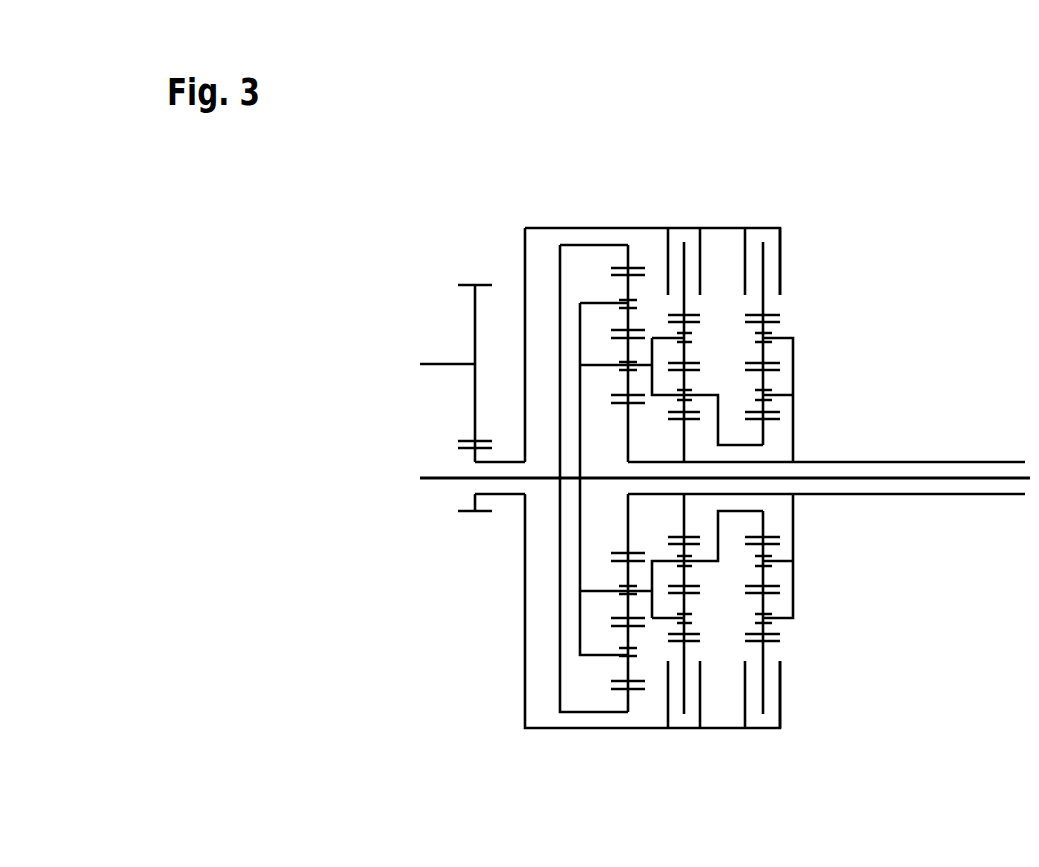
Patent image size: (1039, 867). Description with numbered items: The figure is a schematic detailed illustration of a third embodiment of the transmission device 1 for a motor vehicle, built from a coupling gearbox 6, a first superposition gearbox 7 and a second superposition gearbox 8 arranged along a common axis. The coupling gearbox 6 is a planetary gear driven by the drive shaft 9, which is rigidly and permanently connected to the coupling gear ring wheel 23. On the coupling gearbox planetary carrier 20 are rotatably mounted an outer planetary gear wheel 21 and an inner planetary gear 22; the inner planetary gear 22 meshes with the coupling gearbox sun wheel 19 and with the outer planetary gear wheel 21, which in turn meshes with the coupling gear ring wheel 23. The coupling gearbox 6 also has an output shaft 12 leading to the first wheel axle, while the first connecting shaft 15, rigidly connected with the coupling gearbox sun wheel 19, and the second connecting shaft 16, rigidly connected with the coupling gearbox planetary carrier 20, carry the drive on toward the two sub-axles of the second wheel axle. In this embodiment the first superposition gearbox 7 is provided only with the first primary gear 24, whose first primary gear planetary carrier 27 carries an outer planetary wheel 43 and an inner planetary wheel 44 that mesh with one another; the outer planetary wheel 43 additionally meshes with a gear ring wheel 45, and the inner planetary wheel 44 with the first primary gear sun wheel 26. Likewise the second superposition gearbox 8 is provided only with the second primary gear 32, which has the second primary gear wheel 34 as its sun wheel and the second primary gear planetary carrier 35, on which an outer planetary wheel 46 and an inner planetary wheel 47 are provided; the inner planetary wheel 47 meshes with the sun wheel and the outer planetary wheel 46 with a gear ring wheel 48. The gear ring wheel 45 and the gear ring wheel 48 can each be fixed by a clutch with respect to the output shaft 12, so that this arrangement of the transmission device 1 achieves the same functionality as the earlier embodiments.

The transmission device 1 is at (838, 132).
The coupling gearbox 6 is at (591, 220).
The first superposition gearbox 7 is at (694, 220).
The second superposition gearbox 8 is at (771, 220).
The drive shaft 9 is at (441, 476).
The output shaft 12 is at (506, 460).
The first connecting shaft 15 is at (878, 460).
The second connecting shaft 16 is at (947, 476).
The coupling gearbox sun wheel 19 is at (617, 553).
The coupling gearbox planetary carrier 20 is at (580, 627).
The outer planetary gear wheel 21 is at (621, 657).
The inner planetary gear 22 is at (620, 588).
The coupling gear ring wheel 23 is at (617, 690).
The first primary gear 24 is at (660, 292).
The first primary gear sun wheel 26 is at (693, 538).
The first primary gear planetary carrier 27 is at (670, 620).
The second primary gear 32 is at (818, 270).
The second primary gear wheel 34 is at (775, 540).
The second primary gear planetary carrier 35 is at (793, 605).
The outer planetary wheel 43 is at (693, 620).
The inner planetary wheel 44 is at (689, 567).
The gear ring wheel 45 is at (681, 627).
The outer planetary wheel 46 is at (776, 636).
The inner planetary wheel 47 is at (775, 585).
The gear ring wheel 48 is at (782, 675).